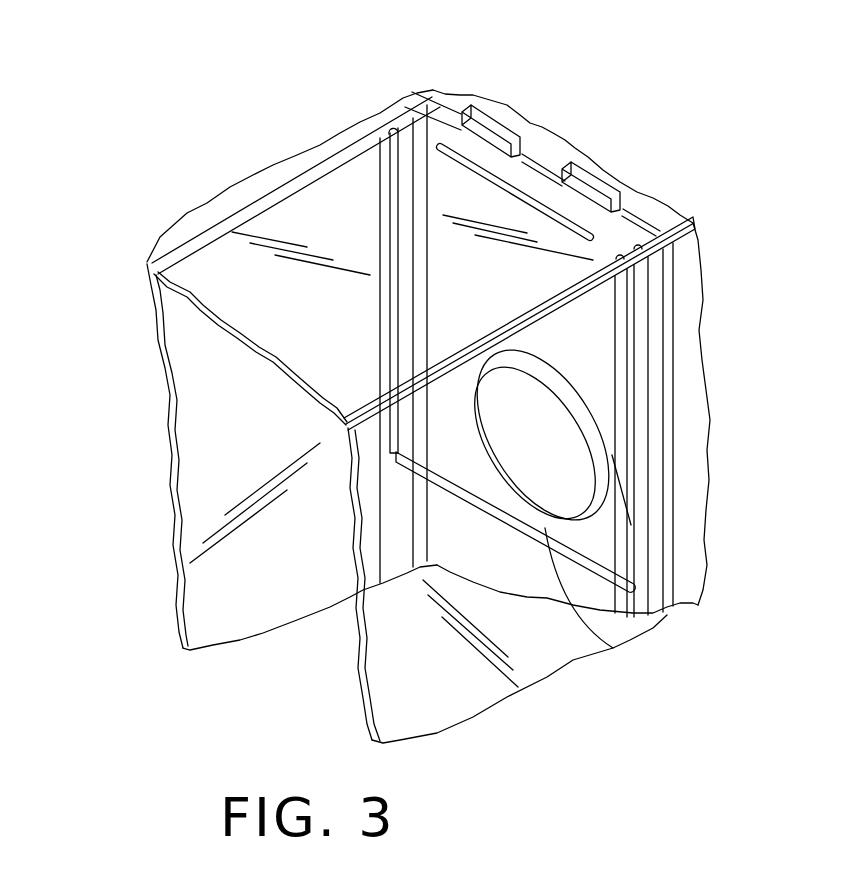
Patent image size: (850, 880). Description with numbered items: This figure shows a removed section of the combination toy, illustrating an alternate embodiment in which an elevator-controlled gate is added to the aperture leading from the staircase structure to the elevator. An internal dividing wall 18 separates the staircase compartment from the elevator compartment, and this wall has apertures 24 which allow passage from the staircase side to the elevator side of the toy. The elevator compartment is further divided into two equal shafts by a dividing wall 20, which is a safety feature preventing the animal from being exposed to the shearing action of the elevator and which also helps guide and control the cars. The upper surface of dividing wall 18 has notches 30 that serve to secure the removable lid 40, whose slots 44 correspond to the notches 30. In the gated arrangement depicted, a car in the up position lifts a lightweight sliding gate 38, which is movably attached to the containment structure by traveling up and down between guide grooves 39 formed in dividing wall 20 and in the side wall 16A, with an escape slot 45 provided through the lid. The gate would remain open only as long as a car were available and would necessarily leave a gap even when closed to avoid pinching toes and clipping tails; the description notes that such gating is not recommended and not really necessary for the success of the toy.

The side wall 16A is at (547, 677).
The dividing wall 18 is at (672, 278).
The dividing wall 20 is at (153, 313).
The apertures 24 is at (530, 498).
The notches 30 is at (635, 208).
The sliding gate 38 is at (613, 648).
The guide grooves 39 is at (403, 225).
The removable lid 40 is at (327, 100).
The slots 44 is at (533, 131).
The escape slot 45 is at (451, 143).